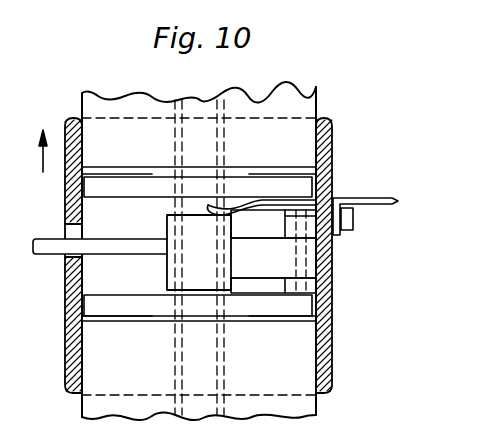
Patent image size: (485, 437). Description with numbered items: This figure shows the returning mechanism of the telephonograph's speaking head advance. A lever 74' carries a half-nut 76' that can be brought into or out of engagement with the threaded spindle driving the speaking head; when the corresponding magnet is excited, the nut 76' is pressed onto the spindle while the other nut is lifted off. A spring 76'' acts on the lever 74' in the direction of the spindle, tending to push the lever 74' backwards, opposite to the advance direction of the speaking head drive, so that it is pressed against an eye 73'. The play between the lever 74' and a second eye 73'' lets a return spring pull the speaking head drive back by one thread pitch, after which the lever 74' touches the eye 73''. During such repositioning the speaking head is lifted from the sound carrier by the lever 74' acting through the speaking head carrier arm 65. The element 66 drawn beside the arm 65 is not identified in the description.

The lever 74' is at (195, 239).
The half-nut 76' is at (179, 244).
The spring 76'' is at (261, 177).
The eye 73'' is at (273, 251).
The eye 73' is at (301, 291).
The speaking head carrier arm 65 is at (356, 198).
The stop member 66 is at (354, 221).